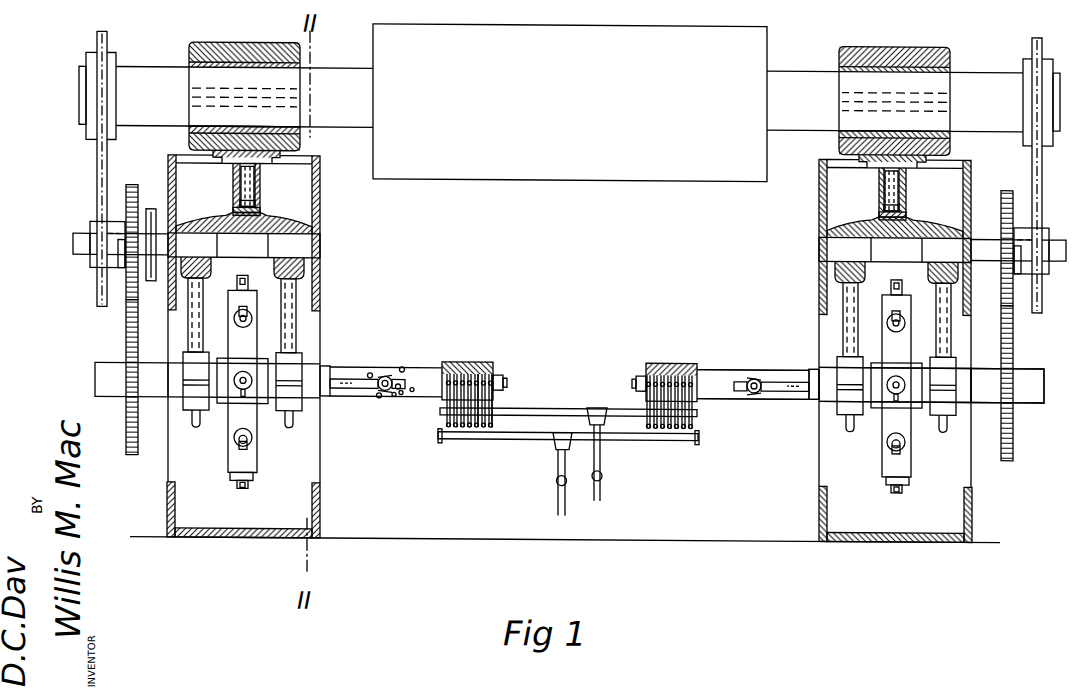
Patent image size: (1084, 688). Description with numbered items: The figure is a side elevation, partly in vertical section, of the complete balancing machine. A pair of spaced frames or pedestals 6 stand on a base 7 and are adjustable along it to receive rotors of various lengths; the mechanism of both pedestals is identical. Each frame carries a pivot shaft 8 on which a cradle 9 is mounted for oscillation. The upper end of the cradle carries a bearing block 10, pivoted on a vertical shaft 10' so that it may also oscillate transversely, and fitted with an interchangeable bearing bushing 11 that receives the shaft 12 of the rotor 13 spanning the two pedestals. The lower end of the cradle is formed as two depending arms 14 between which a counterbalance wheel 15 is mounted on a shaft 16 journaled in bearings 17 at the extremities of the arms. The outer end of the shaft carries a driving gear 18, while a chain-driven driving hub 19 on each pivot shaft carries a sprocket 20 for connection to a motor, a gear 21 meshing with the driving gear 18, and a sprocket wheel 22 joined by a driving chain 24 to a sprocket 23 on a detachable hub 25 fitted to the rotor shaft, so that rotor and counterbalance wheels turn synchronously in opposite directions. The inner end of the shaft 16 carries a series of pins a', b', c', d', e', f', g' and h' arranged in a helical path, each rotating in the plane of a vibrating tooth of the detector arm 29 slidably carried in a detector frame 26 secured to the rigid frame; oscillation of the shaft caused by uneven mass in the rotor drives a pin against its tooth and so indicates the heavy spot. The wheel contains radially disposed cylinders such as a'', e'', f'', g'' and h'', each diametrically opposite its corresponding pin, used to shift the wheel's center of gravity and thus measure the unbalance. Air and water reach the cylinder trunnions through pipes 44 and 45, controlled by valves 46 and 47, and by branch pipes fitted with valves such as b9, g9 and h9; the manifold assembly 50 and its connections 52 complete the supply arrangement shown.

The frame or pedestal 6 is at (313, 525).
The base 7 is at (496, 537).
The pivot shaft 8 is at (303, 247).
The cradle 9 is at (267, 218).
The bearing block 10 is at (545, 152).
The vertical shaft 10' is at (569, 186).
The bearing bushing 11 is at (246, 42).
The shaft 12 is at (333, 60).
The rotor 13 is at (616, 35).
The depending arm 14 is at (187, 327).
The counterbalance wheel 15 is at (232, 440).
The shaft 16 is at (362, 366).
The bearing 17 is at (192, 408).
The driving gear 18 is at (125, 437).
The driving hub 19 is at (120, 268).
The sprocket 20 is at (152, 209).
The gear 21 is at (135, 182).
The sprocket wheel 22 is at (96, 288).
The sprocket 23 is at (97, 43).
The driving chain 24 is at (97, 168).
The detachable hub 25 is at (86, 135).
The detector frame 26 is at (792, 400).
The detector arm 29 is at (757, 400).
The air supply pipe 44 is at (577, 407).
The water supply pipe 45 is at (532, 437).
The valve 46 is at (602, 473).
The valve 47 is at (557, 483).
The needle block 50 is at (445, 422).
The needles 52 is at (478, 427).
The pin a' is at (366, 349).
The pin b' is at (391, 351).
The pin c' is at (403, 353).
The pin d' is at (359, 411).
The pin e' is at (401, 407).
The pin f' is at (409, 406).
The pin g' is at (425, 406).
The pin h' is at (423, 350).
The cylinder e'' is at (569, 276).
The cylinder f'' is at (569, 328).
The cylinder g'' is at (569, 389).
The cylinder h'' is at (569, 452).
The cylinder a'' is at (582, 492).
The valve h9 is at (442, 441).
The valve b9 is at (485, 430).
The valve g9 is at (495, 432).